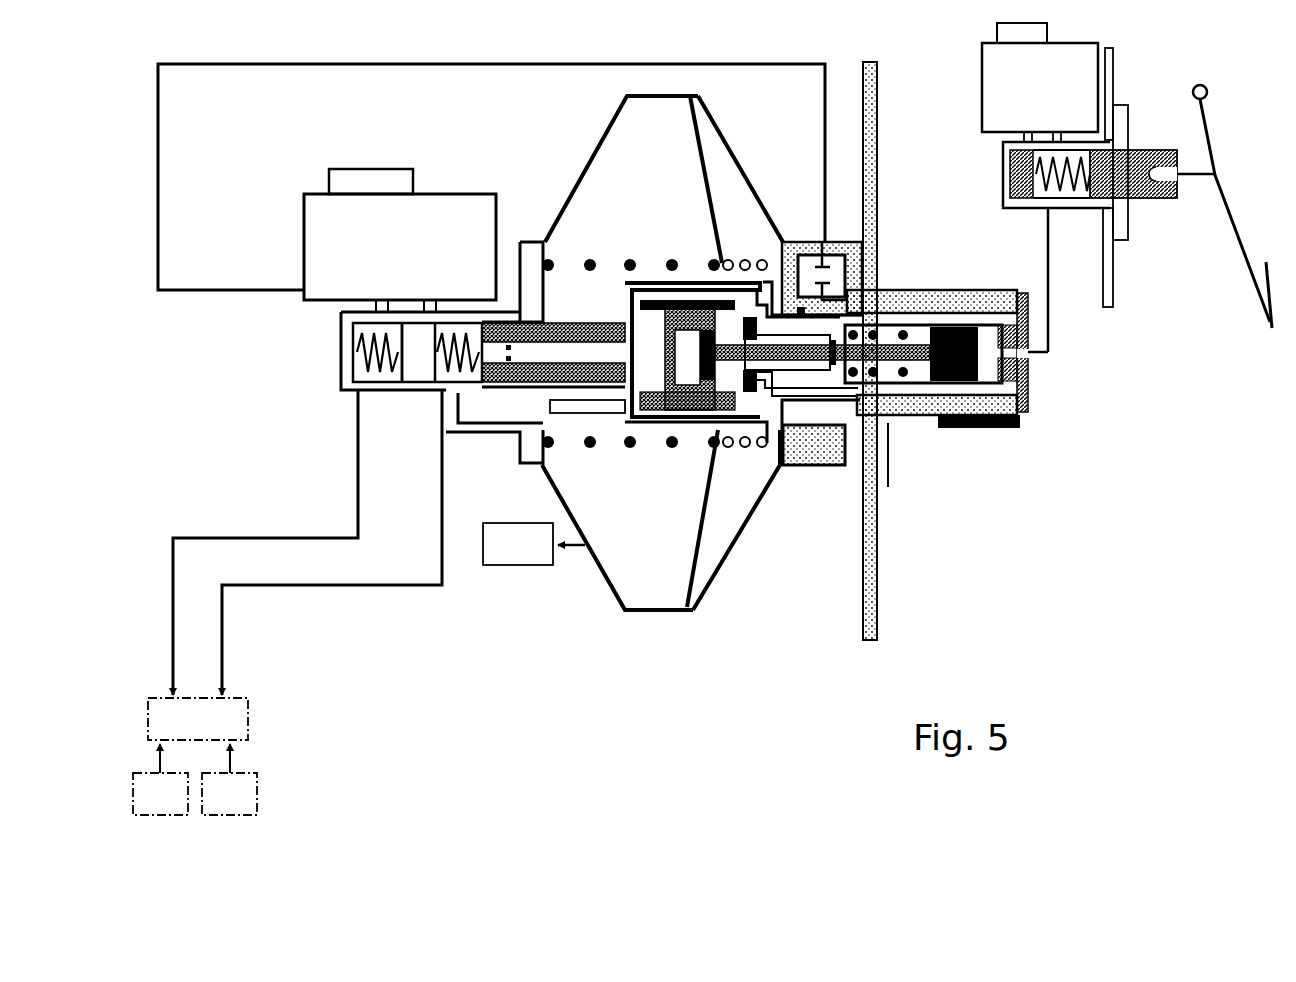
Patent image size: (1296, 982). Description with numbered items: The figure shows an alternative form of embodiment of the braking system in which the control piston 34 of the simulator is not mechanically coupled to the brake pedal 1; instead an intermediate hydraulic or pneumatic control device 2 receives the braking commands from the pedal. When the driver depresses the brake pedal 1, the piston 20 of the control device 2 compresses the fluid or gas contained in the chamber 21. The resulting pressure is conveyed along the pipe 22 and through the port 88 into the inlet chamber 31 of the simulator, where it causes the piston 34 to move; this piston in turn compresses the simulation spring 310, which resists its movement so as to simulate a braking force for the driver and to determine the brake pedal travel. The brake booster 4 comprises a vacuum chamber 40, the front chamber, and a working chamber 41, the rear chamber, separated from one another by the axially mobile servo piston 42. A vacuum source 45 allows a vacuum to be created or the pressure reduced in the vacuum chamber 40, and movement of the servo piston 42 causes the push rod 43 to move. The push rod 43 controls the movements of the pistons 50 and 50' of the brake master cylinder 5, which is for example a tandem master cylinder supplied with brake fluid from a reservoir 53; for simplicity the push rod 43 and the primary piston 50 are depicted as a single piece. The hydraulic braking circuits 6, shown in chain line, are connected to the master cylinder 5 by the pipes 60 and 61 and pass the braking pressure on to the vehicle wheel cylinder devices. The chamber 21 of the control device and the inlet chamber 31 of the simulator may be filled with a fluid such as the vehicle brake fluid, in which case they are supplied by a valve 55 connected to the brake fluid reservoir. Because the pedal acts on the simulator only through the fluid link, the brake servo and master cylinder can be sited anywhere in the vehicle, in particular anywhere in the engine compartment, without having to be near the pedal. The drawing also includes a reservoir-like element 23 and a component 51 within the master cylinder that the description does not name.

The brake pedal 1 is at (1247, 243).
The control device 2 is at (1091, 180).
The brake booster 4 is at (678, 90).
The brake master cylinder 5 is at (389, 375).
The hydraulic braking circuits 6 is at (248, 720).
The piston 20 is at (1130, 150).
The chamber 21 is at (1076, 194).
The pipe 22 is at (1042, 227).
The fluid reservoir 23 is at (982, 86).
The inlet chamber 31 is at (992, 373).
The control piston 34 is at (963, 323).
The vacuum chamber 40 is at (633, 157).
The working chamber 41 is at (725, 167).
The servo piston 42 is at (702, 133).
The push rod 43 is at (600, 322).
The vacuum source 45 is at (518, 566).
The primary piston 50 is at (449, 385).
The piston 50' is at (360, 385).
The valve slide 51 is at (411, 368).
The reservoir 53 is at (320, 222).
The valve 55 is at (832, 277).
The pipe 60 is at (356, 511).
The pipe 61 is at (440, 558).
The port 88 is at (1030, 357).
The simulation spring 310 is at (883, 368).